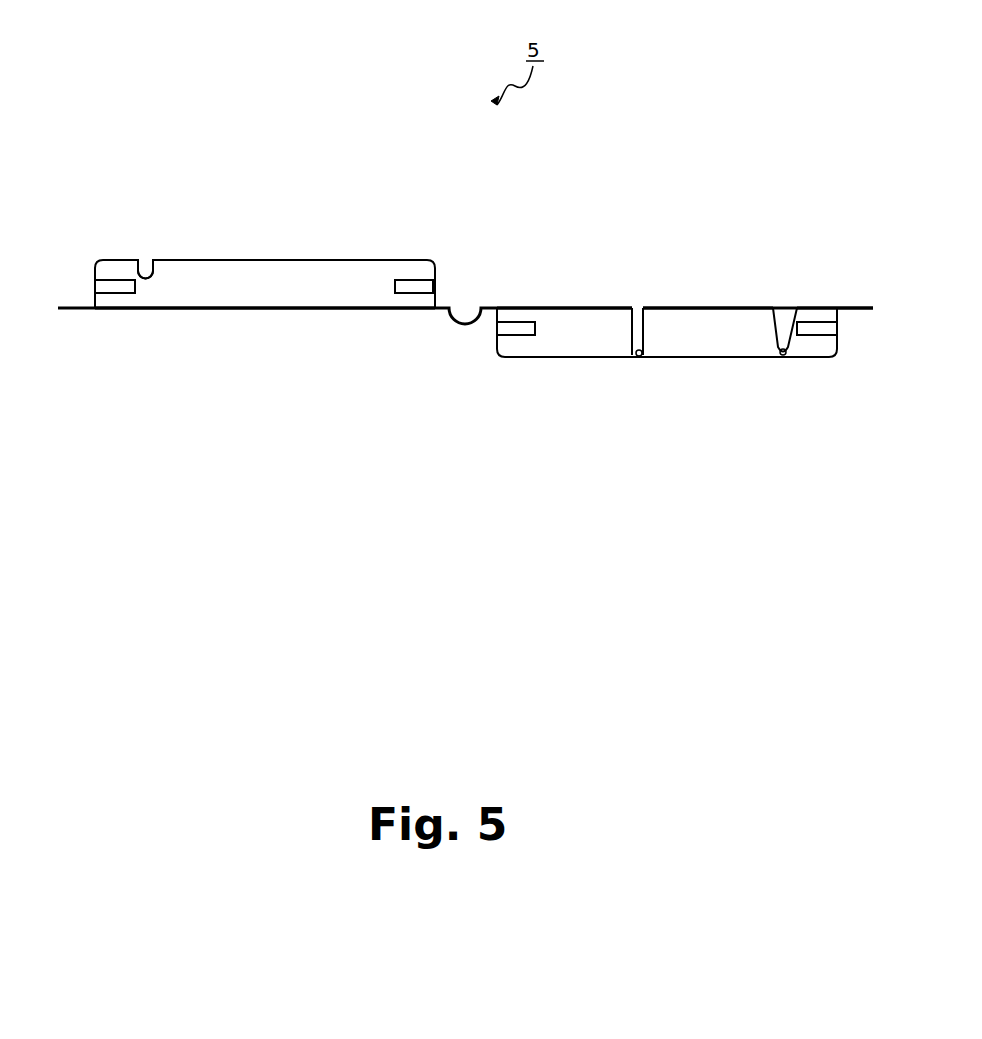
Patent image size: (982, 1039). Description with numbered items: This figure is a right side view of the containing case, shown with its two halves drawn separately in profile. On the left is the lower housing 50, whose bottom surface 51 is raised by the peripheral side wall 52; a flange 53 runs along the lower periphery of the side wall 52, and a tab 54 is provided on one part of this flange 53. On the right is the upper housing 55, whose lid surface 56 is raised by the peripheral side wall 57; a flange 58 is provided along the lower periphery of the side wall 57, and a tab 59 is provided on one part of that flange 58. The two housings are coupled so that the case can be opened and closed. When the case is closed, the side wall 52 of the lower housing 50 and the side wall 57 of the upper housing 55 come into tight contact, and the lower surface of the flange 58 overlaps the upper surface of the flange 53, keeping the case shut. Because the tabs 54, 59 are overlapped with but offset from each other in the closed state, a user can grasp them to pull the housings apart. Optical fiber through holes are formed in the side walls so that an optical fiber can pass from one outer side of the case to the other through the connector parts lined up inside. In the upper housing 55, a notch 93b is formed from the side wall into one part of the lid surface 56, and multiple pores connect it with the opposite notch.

The lower housing 50 is at (341, 310).
The bottom surface 51 is at (287, 259).
The peripheral side wall 52 is at (357, 287).
The flange 53 is at (437, 386).
The tab 54 is at (72, 311).
The upper housing 55 is at (681, 309).
The lid surface 56 is at (702, 358).
The peripheral side wall 57 is at (570, 307).
The flange 58 is at (713, 307).
The tab 59 is at (835, 288).
The notch 93b is at (640, 358).